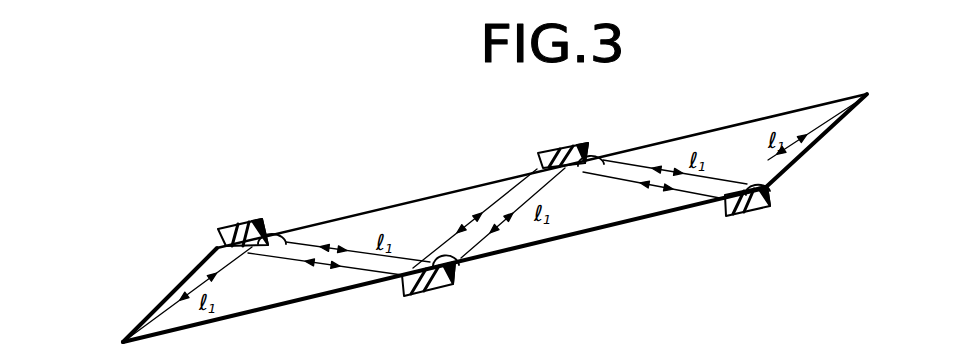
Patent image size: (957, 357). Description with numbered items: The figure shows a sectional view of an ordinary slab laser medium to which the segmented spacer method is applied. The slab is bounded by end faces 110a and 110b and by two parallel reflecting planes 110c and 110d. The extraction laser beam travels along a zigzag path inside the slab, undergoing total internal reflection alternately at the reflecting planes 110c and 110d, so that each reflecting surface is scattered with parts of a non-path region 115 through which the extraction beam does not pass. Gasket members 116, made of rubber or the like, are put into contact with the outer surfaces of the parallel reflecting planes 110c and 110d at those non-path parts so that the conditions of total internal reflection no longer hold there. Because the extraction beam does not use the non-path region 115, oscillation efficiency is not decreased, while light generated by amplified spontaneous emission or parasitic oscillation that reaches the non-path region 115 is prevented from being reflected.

The first end edge of light guide plate 110a is at (163, 295).
The second end edge of light guide plate 110b is at (824, 143).
The parallel reflecting plane 110c is at (433, 194).
The parallel reflecting plane 110d is at (557, 244).
The non-path region 115 is at (292, 237).
The gasket member 116 is at (250, 221).